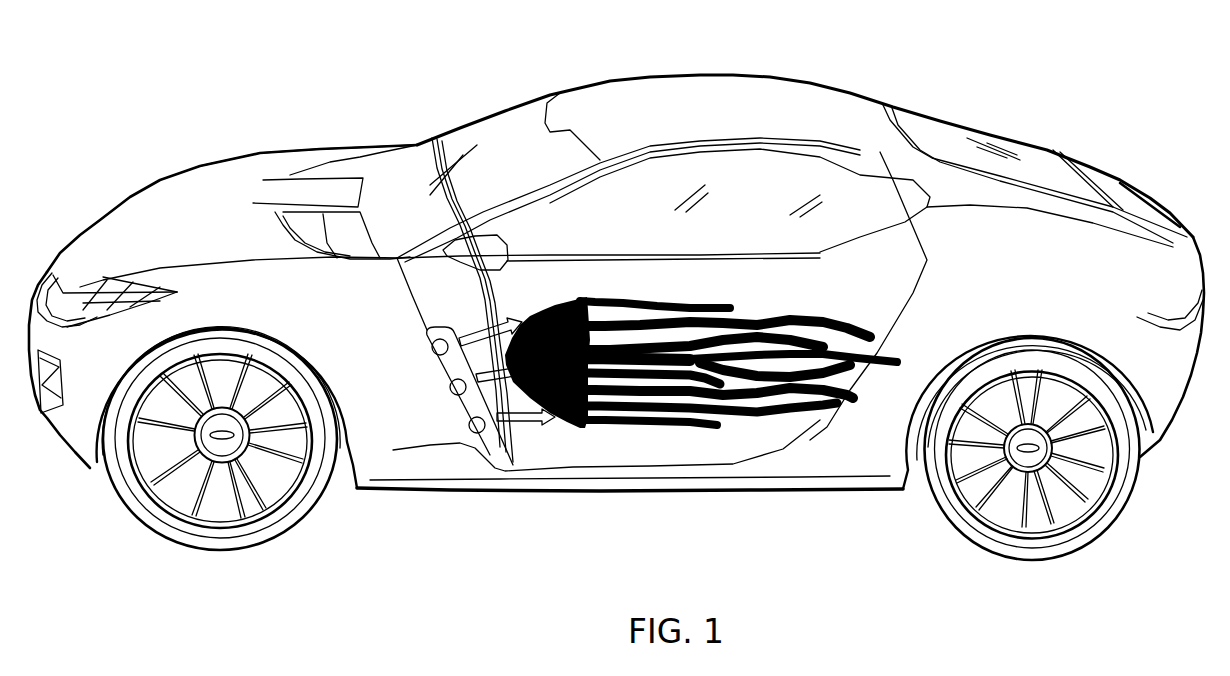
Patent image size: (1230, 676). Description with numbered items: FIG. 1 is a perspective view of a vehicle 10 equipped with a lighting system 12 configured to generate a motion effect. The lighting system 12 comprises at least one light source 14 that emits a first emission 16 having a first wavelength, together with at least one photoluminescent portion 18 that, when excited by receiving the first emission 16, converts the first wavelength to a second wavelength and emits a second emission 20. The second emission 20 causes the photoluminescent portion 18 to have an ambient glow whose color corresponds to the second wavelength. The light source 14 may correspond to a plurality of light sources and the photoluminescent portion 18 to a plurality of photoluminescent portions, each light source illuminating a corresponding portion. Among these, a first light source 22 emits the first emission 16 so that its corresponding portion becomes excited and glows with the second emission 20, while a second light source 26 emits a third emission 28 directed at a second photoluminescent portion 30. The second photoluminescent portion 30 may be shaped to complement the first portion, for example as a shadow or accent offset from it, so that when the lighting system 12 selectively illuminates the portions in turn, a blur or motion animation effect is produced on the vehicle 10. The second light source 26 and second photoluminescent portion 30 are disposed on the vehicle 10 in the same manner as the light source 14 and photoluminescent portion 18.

The vehicle 10 is at (843, 107).
The lighting system 12 is at (336, 79).
The light source 14 is at (623, 298).
The first emission 16 is at (456, 271).
The photoluminescent portion 18 is at (622, 433).
The second emission 20 is at (547, 362).
The first light source 22 is at (585, 410).
The second light source 26 is at (432, 425).
The third emission 28 is at (432, 138).
The second photoluminescent portion 30 is at (725, 290).